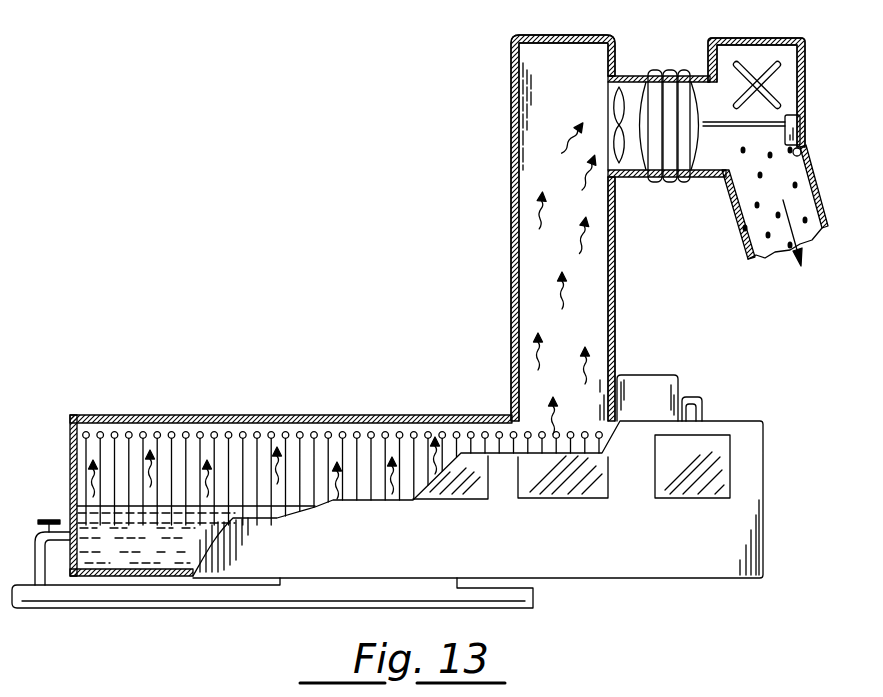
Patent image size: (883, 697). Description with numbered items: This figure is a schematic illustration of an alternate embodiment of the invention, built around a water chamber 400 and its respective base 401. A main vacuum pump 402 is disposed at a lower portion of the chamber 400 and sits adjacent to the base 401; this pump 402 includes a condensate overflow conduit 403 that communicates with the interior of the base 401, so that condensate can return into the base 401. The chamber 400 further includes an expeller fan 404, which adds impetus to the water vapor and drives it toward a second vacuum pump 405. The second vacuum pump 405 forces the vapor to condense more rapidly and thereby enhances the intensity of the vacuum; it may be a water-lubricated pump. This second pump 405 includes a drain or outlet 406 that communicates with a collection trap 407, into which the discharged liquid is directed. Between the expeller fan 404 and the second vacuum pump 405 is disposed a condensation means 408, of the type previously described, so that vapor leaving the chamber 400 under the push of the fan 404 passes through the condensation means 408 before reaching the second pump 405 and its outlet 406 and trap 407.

The water chamber 400 is at (510, 128).
The base 401 is at (125, 415).
The main vacuum pump 402 is at (645, 375).
The condensate overflow conduit 403 is at (693, 397).
The expeller fan 404 is at (620, 86).
The second vacuum pump 405 is at (750, 38).
The drain or outlet 406 is at (800, 152).
The collection trap 407 is at (822, 210).
The condensation means 408 is at (667, 183).